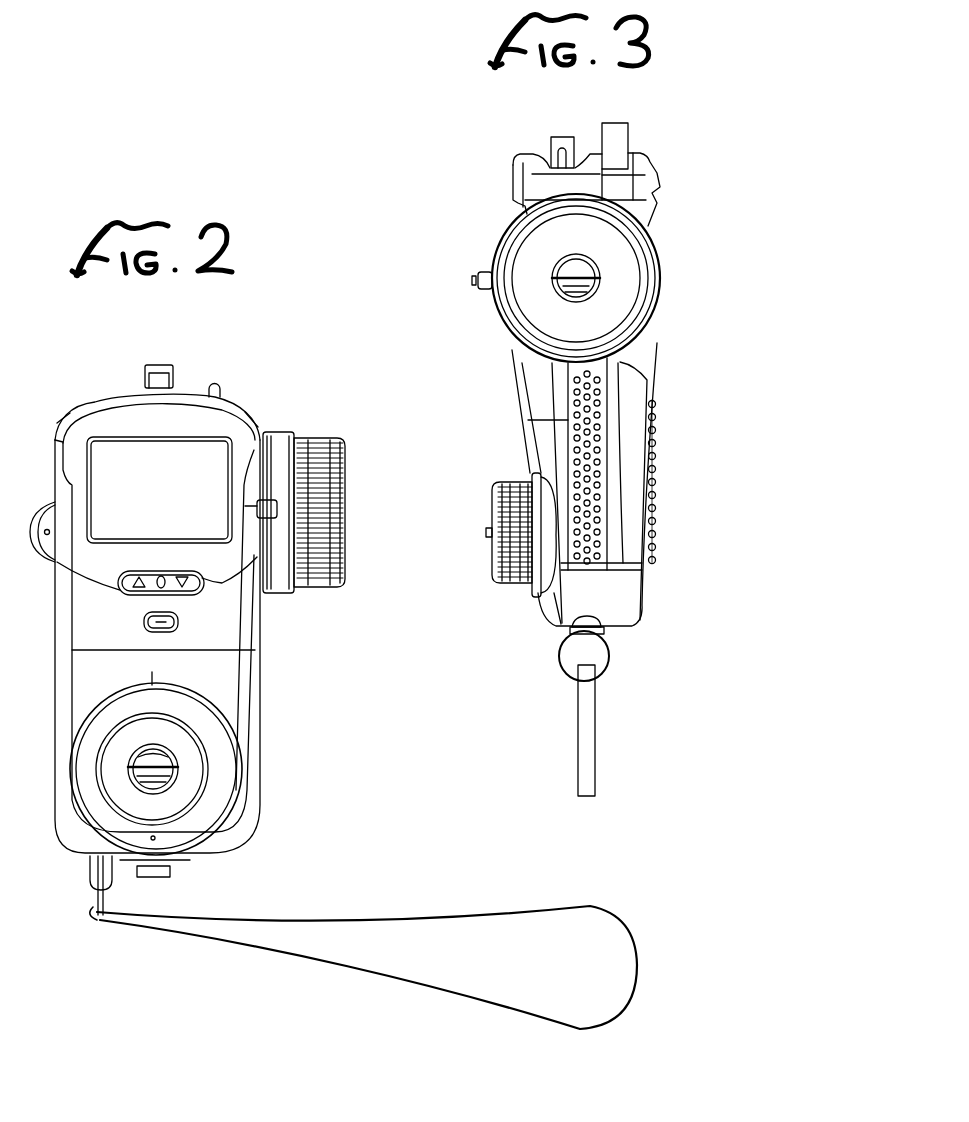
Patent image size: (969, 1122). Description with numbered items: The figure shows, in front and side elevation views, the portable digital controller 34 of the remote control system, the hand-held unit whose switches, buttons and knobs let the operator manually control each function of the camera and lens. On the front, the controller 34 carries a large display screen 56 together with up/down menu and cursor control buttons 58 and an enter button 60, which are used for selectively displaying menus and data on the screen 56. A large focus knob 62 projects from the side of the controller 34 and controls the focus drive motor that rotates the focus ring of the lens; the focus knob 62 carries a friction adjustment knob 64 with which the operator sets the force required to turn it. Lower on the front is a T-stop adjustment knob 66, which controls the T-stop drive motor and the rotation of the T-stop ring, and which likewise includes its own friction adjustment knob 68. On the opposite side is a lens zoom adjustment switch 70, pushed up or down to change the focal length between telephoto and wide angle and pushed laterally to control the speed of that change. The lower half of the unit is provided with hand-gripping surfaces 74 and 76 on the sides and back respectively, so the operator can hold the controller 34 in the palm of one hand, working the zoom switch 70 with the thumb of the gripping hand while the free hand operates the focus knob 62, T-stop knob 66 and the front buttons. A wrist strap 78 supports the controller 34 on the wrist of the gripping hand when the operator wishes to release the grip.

In FIG. 2, the digital controller 34 is at (283, 665).
In FIG. 3, the digital controller 34 is at (676, 407).
In FIG. 2, the display screen 56 is at (172, 501).
In FIG. 2, the up/down menu and cursor control buttons 58 is at (118, 578).
In FIG. 2, the enter button 60 is at (144, 622).
In FIG. 2, the focus knob 62 is at (318, 438).
In FIG. 3, the focus knob 62 is at (500, 245).
In FIG. 3, the friction adjustment knob 64 is at (596, 262).
In FIG. 2, the T-stop adjustment knob 66 is at (210, 748).
In FIG. 3, the T-stop adjustment knob 66 is at (522, 586).
In FIG. 2, the friction adjustment knob 68 is at (172, 774).
In FIG. 2, the lens zoom adjustment switch 70 is at (40, 512).
In FIG. 3, the hand-gripping surface 74 is at (590, 494).
In FIG. 3, the hand-gripping surface 76 is at (658, 455).
In FIG. 2, the wrist strap 78 is at (412, 916).